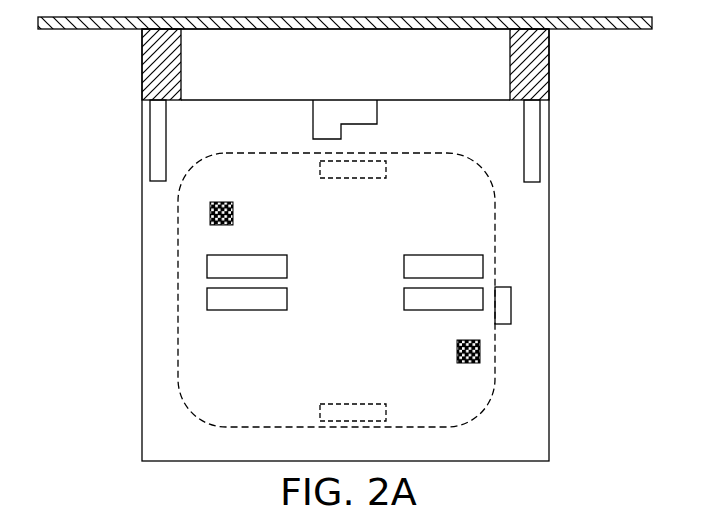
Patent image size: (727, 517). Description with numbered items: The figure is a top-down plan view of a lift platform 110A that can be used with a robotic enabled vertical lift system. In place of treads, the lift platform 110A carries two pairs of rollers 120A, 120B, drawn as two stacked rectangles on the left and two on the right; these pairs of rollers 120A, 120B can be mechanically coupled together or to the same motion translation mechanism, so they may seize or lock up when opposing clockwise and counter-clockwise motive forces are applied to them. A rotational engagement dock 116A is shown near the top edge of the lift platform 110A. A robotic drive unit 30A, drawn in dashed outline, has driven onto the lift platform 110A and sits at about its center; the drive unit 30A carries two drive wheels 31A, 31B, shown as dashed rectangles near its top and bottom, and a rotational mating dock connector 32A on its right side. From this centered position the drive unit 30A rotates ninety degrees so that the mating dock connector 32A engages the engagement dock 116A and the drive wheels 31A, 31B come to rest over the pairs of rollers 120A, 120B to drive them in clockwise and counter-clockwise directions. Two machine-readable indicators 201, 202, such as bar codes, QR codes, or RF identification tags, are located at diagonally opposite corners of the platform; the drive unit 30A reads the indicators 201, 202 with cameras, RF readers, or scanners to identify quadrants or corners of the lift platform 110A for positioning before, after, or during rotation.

The lift platform 110A is at (566, 167).
The rotational engagement dock 116A is at (358, 113).
The robotic drive unit 30A is at (497, 226).
The drive wheel 31A is at (358, 169).
The drive wheel 31B is at (357, 412).
The rotational mating dock connector 32A is at (503, 302).
The indicator 201 is at (225, 202).
The indicator 202 is at (468, 363).
The pair of rollers 120A is at (287, 300).
The pair of rollers 120B is at (404, 263).